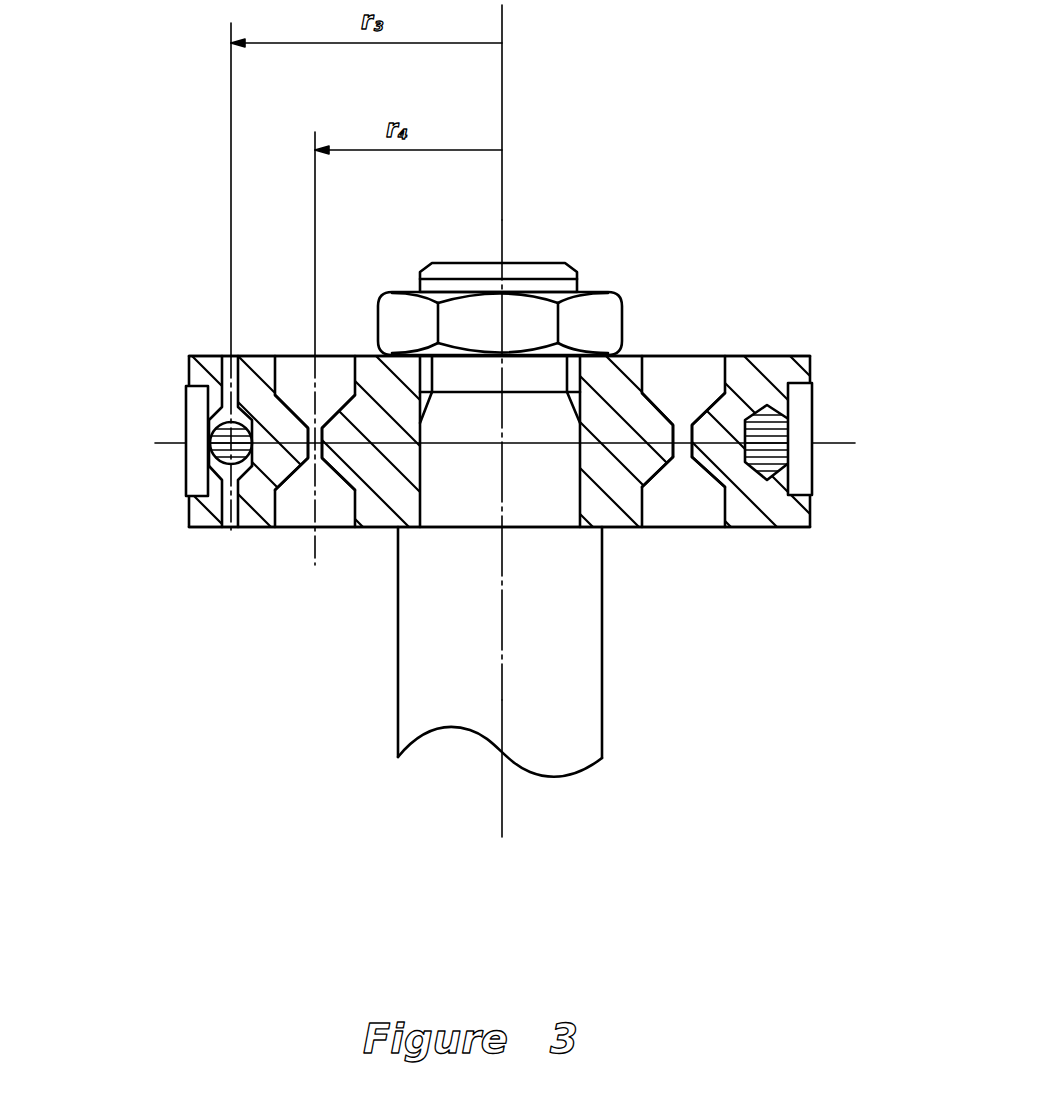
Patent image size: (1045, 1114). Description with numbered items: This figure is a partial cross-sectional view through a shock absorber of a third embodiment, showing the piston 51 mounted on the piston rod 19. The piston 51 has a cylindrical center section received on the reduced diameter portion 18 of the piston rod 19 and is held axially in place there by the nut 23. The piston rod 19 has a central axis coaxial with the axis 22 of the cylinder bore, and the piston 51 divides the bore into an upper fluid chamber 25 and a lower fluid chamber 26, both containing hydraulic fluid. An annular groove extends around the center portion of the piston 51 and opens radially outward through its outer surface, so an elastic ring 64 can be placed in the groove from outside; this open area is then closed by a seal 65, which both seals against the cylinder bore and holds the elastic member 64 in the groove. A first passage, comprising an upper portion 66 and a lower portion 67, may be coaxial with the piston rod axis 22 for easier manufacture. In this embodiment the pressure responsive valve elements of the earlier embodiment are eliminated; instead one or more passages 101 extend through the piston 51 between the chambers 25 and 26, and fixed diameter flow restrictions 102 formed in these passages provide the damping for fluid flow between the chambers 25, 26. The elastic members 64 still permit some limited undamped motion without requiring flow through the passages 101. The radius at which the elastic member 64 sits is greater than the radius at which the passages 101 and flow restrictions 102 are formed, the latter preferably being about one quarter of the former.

The reduced diameter portion 18 is at (562, 493).
The piston rod 19 is at (398, 701).
The axis 22 is at (507, 696).
The nut 23 is at (413, 290).
The upper fluid chamber 25 is at (632, 85).
The lower fluid chamber 26 is at (700, 651).
The piston 51 is at (766, 352).
The elastic ring 64 is at (210, 433).
The seal 65 is at (805, 470).
The upper portion of first passage 66 is at (223, 380).
The lower portion of first passage 67 is at (233, 505).
The passages 101 is at (278, 497).
The fixed diameter flow restrictions 102 is at (683, 423).